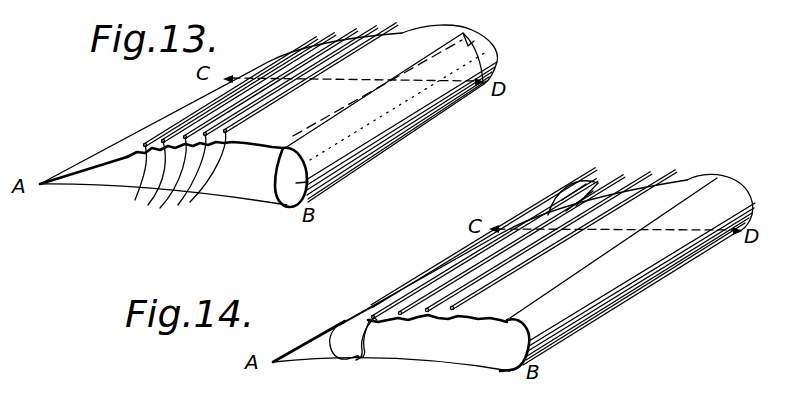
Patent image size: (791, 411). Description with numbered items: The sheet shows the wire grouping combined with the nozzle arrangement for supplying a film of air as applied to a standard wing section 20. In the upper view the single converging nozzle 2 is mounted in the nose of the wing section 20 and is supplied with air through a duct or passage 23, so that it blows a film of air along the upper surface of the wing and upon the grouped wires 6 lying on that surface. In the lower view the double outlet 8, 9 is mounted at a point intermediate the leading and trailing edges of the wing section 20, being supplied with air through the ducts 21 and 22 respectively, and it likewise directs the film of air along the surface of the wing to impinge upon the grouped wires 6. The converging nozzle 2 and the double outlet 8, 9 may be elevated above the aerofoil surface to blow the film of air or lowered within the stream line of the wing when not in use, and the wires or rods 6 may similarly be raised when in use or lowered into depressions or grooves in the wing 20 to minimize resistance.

In FIG. 13, the converging nozzle 2 is at (282, 148).
In FIG. 13, the grouped wires 6 is at (260, 121).
In FIG. 14, the grouped wires 6 is at (478, 290).
In FIG. 14, the double outlet 8 is at (377, 320).
In FIG. 14, the double outlet 9 is at (382, 304).
In FIG. 13, the standard wing section 20 is at (211, 188).
In FIG. 14, the standard wing section 20 is at (440, 360).
In FIG. 14, the duct 21 is at (357, 358).
In FIG. 14, the duct 22 is at (338, 357).
In FIG. 13, the duct or passage 23 is at (322, 183).